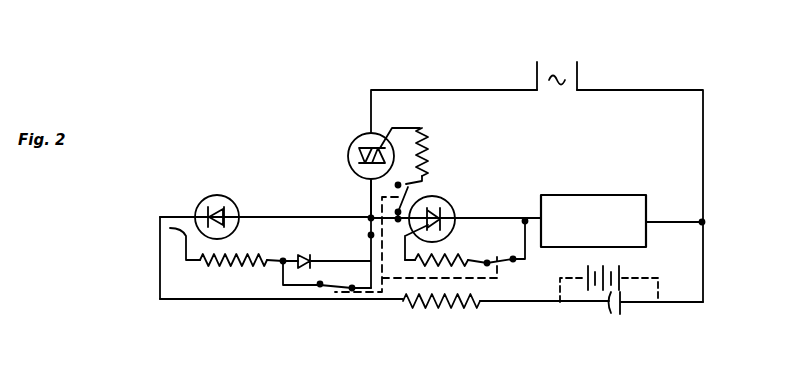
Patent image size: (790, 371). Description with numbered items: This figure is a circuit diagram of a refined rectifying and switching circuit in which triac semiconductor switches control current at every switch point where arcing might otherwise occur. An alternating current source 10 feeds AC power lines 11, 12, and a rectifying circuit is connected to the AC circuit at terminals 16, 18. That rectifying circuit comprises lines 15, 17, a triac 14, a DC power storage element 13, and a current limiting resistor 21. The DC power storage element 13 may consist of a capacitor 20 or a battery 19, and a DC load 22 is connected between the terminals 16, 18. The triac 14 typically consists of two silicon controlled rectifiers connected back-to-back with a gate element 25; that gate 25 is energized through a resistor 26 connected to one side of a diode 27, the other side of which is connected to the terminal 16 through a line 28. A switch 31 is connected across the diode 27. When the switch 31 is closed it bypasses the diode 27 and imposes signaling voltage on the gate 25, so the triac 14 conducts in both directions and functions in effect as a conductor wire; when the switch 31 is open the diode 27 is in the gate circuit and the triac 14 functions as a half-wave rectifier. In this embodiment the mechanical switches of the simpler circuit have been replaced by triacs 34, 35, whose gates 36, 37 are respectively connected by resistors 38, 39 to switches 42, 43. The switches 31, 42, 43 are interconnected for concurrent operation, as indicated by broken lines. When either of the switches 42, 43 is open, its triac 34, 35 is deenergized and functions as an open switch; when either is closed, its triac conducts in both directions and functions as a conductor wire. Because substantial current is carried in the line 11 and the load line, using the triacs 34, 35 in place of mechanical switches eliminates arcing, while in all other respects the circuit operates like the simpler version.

The alternating current source 10 is at (553, 68).
The AC power line 11 is at (369, 184).
The AC power line 12 is at (705, 163).
The DC power storage element 13 is at (583, 311).
The triac 14 is at (201, 203).
The line 15 is at (160, 260).
The terminal 16 is at (368, 216).
The line 17 is at (705, 268).
The terminal 18 is at (705, 222).
The battery 19 is at (588, 268).
The capacitor 20 is at (615, 318).
The current limiting resistor 21 is at (412, 305).
The DC load 22 is at (595, 200).
The gate element 25 is at (170, 228).
The resistor 26 is at (232, 268).
The diode 27 is at (302, 253).
The line 28 is at (369, 235).
The switch 31 is at (349, 272).
The triac 34 is at (349, 153).
The triac 35 is at (451, 206).
The gate 36 is at (392, 127).
The gate 37 is at (410, 234).
The resistor 38 is at (429, 150).
The resistor 39 is at (446, 259).
The switch 42 is at (410, 186).
The switch 43 is at (498, 262).